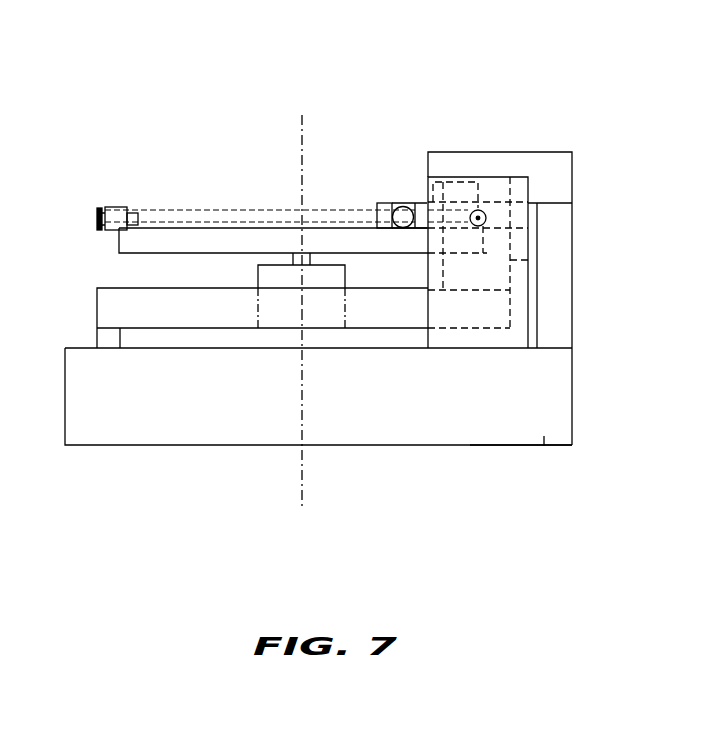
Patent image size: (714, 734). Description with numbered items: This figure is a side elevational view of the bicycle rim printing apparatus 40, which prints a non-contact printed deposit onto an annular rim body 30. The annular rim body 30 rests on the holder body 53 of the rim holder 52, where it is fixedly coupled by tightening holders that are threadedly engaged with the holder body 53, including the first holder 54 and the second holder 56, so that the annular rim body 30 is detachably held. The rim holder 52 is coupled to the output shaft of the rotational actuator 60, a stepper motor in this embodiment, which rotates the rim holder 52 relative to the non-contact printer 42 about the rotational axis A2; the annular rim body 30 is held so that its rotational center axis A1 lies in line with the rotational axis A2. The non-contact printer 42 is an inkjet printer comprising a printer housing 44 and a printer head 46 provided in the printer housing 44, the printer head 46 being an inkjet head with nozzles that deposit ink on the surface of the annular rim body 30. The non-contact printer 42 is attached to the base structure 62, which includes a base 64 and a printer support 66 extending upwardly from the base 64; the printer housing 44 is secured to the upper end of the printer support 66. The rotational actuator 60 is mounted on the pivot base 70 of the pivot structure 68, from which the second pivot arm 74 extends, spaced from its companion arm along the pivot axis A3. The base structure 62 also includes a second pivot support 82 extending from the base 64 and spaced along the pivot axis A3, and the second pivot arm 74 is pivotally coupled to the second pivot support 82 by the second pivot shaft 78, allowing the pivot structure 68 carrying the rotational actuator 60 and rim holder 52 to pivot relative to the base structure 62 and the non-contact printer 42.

The bicycle rim printing apparatus 40 is at (148, 67).
The annular rim body 30 is at (156, 201).
The non-contact printer 42 is at (529, 140).
The printer housing 44 is at (560, 158).
The printer head 46 is at (457, 183).
The rim holder 52 is at (85, 175).
The holder body 53 is at (118, 247).
The first holder 54 is at (400, 204).
The second holder 56 is at (95, 212).
The rotational actuator 60 is at (250, 282).
The base structure 62 is at (506, 460).
The base 64 is at (544, 440).
The printer support 66 is at (558, 325).
The pivot structure 68 is at (83, 291).
The pivot base 70 is at (103, 317).
The second pivot arm 74 is at (545, 260).
The second pivot shaft 78 is at (486, 210).
The second pivot support 82 is at (438, 180).
The rotational center axis A1 is at (298, 213).
The rotational axis A2 is at (300, 470).
The pivot axis A3 is at (478, 212).